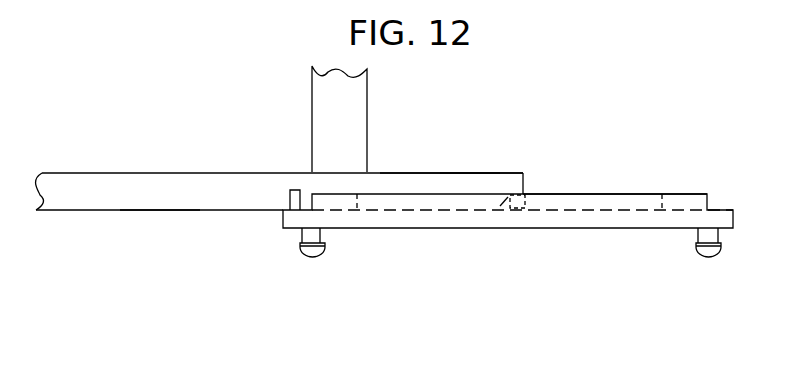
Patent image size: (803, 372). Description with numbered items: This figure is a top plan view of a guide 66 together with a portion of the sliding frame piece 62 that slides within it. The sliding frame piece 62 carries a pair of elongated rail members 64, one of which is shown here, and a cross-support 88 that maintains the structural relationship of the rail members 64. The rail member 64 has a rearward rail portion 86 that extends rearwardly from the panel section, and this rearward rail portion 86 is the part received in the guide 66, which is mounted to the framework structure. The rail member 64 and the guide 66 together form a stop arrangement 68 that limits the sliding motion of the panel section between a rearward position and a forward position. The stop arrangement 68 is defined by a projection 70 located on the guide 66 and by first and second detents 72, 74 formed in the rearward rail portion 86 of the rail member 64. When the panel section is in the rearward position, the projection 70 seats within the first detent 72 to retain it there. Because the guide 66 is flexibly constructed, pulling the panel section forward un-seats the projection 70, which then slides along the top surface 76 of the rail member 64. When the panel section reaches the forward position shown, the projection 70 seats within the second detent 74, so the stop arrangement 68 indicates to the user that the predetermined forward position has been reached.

The sliding frame piece 62 is at (150, 235).
The elongated rail member 64 is at (170, 186).
The guide 66 is at (680, 173).
The stop arrangement 68 is at (543, 176).
The projection 70 is at (505, 200).
The first detent 72 is at (289, 200).
The second detent 74 is at (496, 207).
The top surface 76 is at (468, 182).
The rearward rail portion 86 is at (402, 184).
The cross-support 88 is at (345, 108).